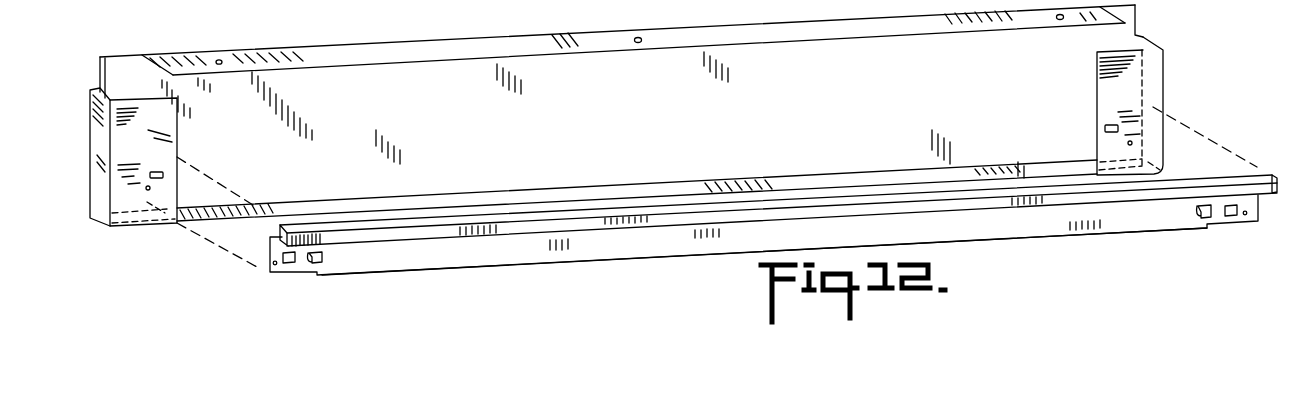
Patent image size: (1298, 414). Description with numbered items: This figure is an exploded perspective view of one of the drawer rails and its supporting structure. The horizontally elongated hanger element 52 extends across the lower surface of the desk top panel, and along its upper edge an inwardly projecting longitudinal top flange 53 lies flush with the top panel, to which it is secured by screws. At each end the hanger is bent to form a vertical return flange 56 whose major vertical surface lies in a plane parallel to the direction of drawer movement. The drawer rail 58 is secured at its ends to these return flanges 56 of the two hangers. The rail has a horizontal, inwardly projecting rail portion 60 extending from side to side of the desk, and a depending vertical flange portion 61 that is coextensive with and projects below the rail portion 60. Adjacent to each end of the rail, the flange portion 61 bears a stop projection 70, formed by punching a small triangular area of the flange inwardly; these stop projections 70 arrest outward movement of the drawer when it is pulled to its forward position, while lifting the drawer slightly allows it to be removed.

The hanger element 52 is at (332, 90).
The top flange 53 is at (501, 40).
The return flange 56 is at (165, 123).
The drawer rail 58 is at (405, 233).
The rail portion 60 is at (680, 215).
The flange portion 61 is at (588, 250).
The stop projection 70 is at (312, 260).